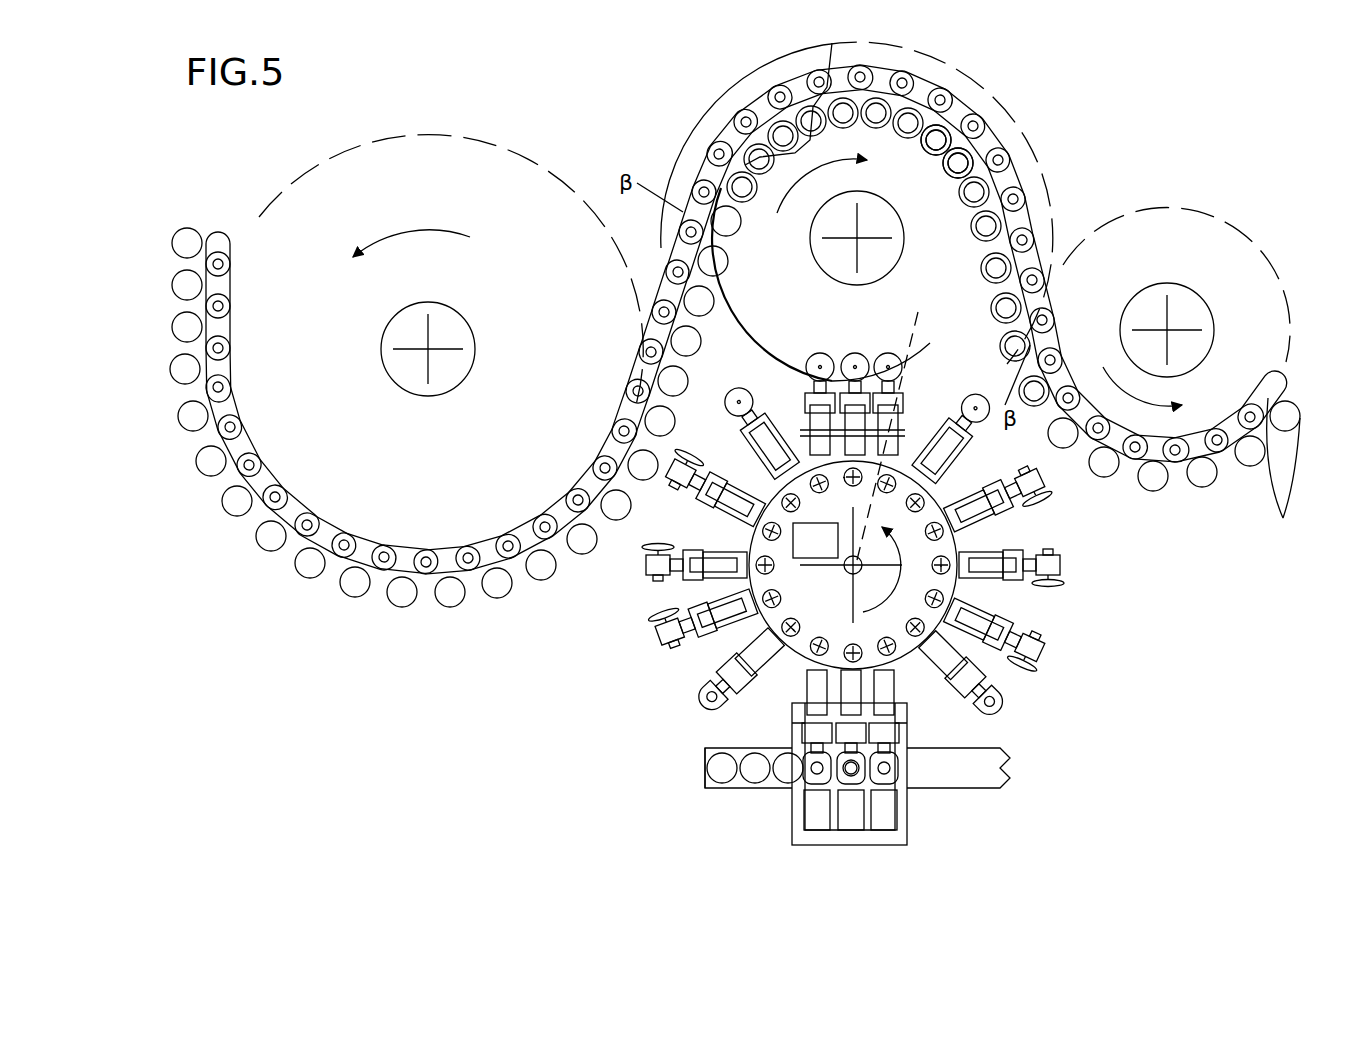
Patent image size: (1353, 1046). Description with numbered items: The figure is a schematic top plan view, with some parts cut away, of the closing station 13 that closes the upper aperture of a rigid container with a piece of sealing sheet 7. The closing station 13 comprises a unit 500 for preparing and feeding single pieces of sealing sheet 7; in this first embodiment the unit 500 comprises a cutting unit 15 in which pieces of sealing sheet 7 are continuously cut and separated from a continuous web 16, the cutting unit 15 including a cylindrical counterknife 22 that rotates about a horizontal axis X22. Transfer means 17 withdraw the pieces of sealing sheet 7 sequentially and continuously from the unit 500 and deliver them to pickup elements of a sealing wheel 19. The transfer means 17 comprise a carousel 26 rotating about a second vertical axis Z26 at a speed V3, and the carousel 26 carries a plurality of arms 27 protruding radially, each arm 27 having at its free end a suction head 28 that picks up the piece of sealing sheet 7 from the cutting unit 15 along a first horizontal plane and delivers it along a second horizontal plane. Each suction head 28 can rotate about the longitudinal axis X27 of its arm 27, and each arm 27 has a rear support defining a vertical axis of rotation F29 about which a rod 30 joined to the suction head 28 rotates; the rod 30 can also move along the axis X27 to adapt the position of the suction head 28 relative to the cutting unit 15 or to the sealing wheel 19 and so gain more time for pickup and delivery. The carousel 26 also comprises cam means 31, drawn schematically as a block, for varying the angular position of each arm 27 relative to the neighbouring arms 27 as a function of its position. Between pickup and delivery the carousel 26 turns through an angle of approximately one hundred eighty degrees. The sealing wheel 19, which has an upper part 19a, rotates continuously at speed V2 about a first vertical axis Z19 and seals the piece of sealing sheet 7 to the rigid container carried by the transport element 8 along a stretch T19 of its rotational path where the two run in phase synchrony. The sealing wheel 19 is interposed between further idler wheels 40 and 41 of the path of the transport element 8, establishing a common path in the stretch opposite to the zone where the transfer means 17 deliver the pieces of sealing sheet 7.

The idler wheel 40 is at (278, 268).
The transport element 8 is at (1030, 176).
The idler wheel 41 is at (1192, 210).
The sealing wheel 19 is at (725, 162).
The upper part of the sealing wheel 19a is at (735, 125).
The stretch of the rotational path T19 is at (880, 115).
The first vertical axis Z19 is at (885, 215).
The speed of the sealing wheel V2 is at (833, 63).
The sealing sheet 7 is at (1215, 485).
The closing station 13 is at (1060, 604).
The speed of the transfer means V3 is at (900, 557).
The second vertical axis Z26 is at (902, 420).
The cam means 31 is at (805, 540).
The transfer means 17 is at (797, 595).
The vertical axis of rotation F29 is at (720, 383).
The arm 27 is at (685, 600).
The suction head 28 is at (655, 628).
The carousel 26 is at (1058, 567).
The rod 30 is at (700, 625).
The longitudinal axis of extension of the arm X27 is at (700, 735).
The cylindrical counterknife 22 is at (828, 800).
The horizontal axis X22 is at (850, 797).
The cutting unit 15 is at (782, 798).
The continuous web 16 is at (713, 790).
The unit for preparing and feeding 500 is at (680, 795).